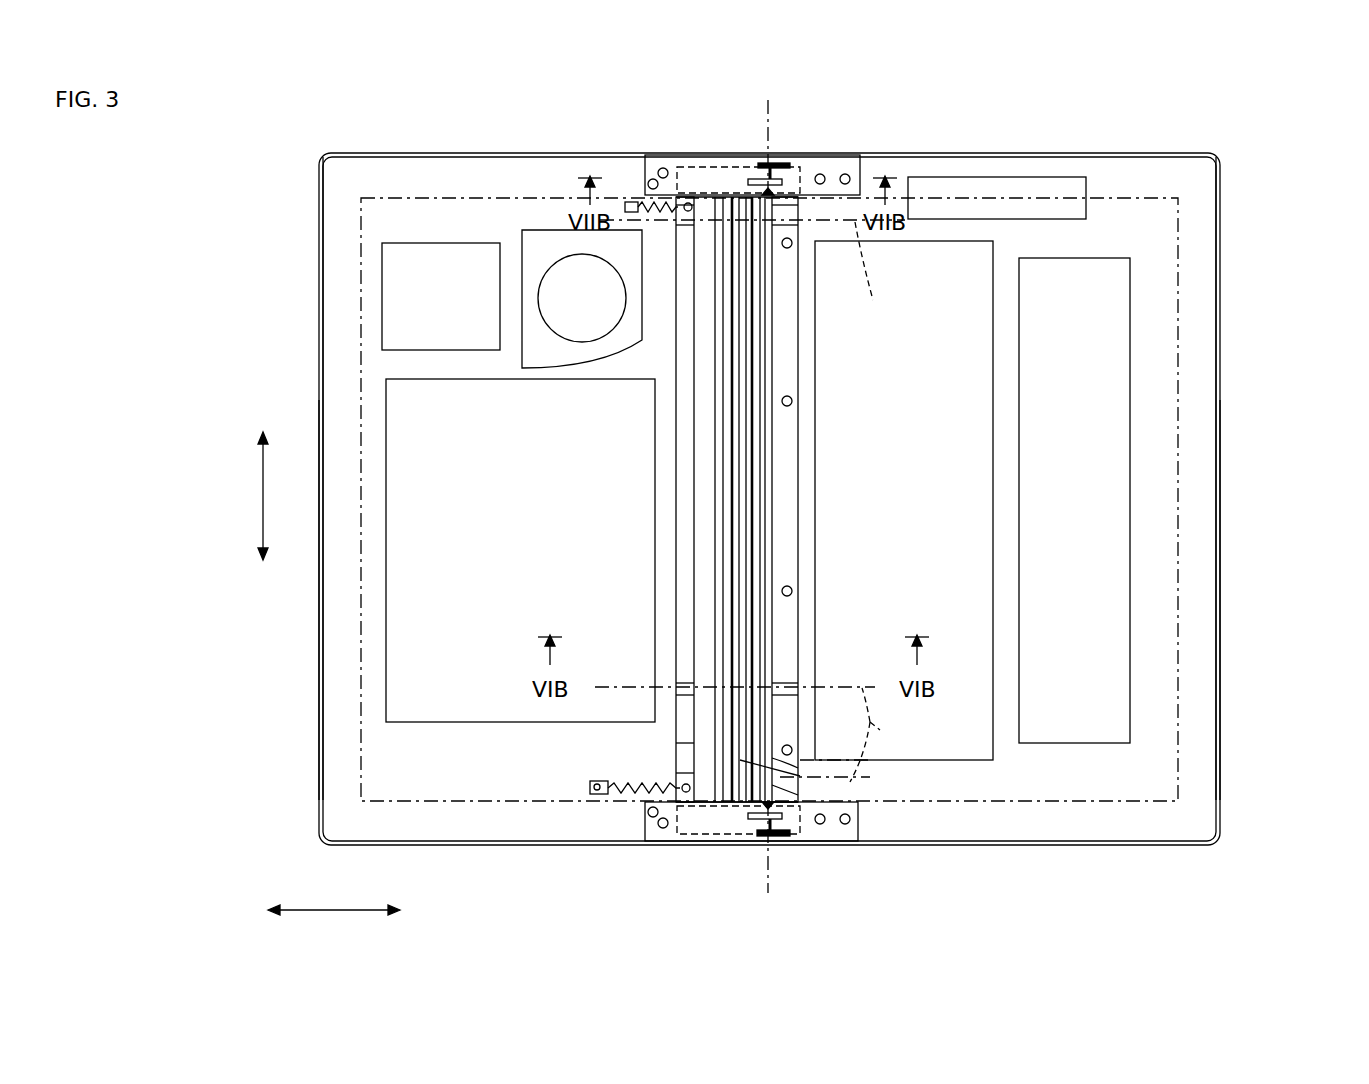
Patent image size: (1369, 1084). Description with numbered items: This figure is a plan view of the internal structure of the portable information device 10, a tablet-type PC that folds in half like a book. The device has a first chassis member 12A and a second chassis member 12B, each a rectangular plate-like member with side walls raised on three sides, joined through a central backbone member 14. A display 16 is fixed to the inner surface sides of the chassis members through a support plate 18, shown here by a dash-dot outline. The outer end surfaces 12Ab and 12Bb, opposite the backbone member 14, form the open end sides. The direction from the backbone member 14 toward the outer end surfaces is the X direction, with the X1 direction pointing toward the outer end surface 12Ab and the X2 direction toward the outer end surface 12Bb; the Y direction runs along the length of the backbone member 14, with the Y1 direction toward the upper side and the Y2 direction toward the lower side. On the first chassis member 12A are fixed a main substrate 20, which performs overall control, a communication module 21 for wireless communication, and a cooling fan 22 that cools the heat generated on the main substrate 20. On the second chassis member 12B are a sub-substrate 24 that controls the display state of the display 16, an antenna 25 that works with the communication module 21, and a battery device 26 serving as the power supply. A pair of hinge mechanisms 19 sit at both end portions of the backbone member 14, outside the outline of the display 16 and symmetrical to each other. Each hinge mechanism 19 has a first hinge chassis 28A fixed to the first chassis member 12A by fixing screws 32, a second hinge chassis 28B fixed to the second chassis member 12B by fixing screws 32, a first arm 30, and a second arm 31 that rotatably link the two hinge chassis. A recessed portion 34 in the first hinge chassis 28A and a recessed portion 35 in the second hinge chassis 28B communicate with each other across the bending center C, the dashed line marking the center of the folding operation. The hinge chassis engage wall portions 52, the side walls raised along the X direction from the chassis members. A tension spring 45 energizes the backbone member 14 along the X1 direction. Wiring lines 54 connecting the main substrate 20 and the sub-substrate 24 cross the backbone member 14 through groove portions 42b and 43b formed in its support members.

The portable information device 10 is at (248, 103).
The first chassis member 12A is at (373, 851).
The second chassis member 12B is at (1181, 852).
The outer end surface 12Ab is at (320, 697).
The outer end surface 12Bb is at (1219, 697).
The backbone member 14 is at (798, 525).
The display 16 is at (777, 453).
The support plate 18 is at (1152, 197).
The hinge mechanism 19 is at (697, 155).
The main substrate 20 is at (400, 630).
The communication module 21 is at (405, 287).
The cooling fan 22 is at (530, 240).
The sub-substrate 24 is at (1115, 365).
The antenna 25 is at (990, 177).
The battery device 26 is at (960, 460).
The first hinge chassis 28A is at (664, 168).
The second hinge chassis 28B is at (820, 173).
The first arm 30 is at (760, 163).
The second arm 31 is at (774, 179).
The fixing screw 32 is at (653, 178).
The recessed portion 34 is at (712, 167).
The recessed portion 35 is at (800, 180).
The groove portion 42b is at (686, 232).
The groove portion 43b is at (792, 250).
The tension spring 45 is at (686, 212).
The wall portion 52 is at (383, 152).
The wiring line 54 is at (824, 502).
The bending center C is at (767, 496).
The X direction X is at (334, 921).
The X1 direction X1 is at (247, 910).
The X2 direction X2 is at (419, 910).
The Y direction Y is at (253, 496).
The Y1 direction Y1 is at (263, 420).
The Y2 direction Y2 is at (263, 577).